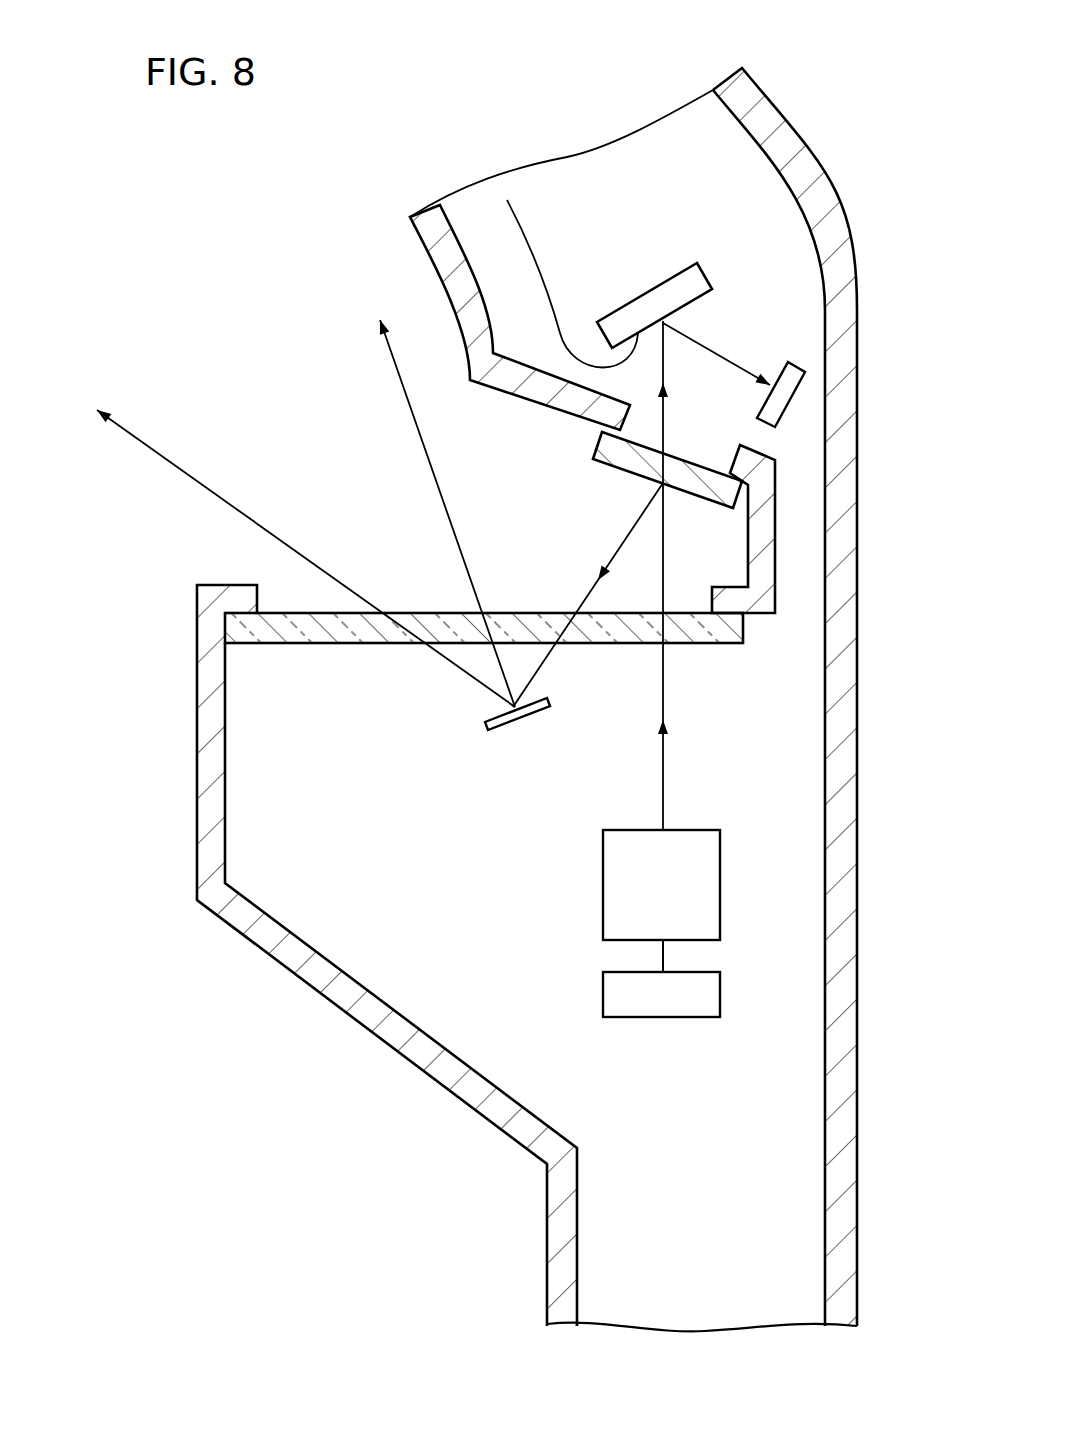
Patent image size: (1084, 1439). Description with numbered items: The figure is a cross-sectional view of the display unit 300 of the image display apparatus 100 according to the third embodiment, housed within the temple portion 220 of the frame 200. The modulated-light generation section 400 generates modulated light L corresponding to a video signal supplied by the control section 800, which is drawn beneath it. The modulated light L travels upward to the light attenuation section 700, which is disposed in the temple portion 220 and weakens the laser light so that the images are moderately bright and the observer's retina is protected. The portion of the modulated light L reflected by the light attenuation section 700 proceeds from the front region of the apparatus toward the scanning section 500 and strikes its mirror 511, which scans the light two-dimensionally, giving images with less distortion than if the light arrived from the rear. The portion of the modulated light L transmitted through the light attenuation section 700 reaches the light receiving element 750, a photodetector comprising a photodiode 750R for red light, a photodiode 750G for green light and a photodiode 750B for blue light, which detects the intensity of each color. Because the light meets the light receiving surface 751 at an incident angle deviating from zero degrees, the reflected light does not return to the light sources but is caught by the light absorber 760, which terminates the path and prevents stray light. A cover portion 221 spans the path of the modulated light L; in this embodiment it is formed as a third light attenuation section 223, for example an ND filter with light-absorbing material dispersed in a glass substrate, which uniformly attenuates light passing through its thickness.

The image display apparatus 100 is at (383, 107).
The housing 200 is at (812, 138).
The temple portion 220 is at (838, 288).
The cover portion 221 is at (313, 630).
The third light attenuation section 223 is at (484, 628).
The display unit 300 is at (557, 909).
The modulated-light generation section 400 is at (705, 898).
The scanning section 500 is at (500, 745).
The mirror 511 is at (535, 723).
The light attenuation section 700 is at (623, 457).
The light receiving element 750 is at (630, 317).
The photodiode 750R is at (654, 305).
The photodiode 750G is at (654, 305).
The photodiode 750B is at (654, 305).
The light receiving surface 751 is at (507, 200).
The light absorber 760 is at (795, 373).
The control section 800 is at (703, 995).
The modulated light L is at (665, 770).